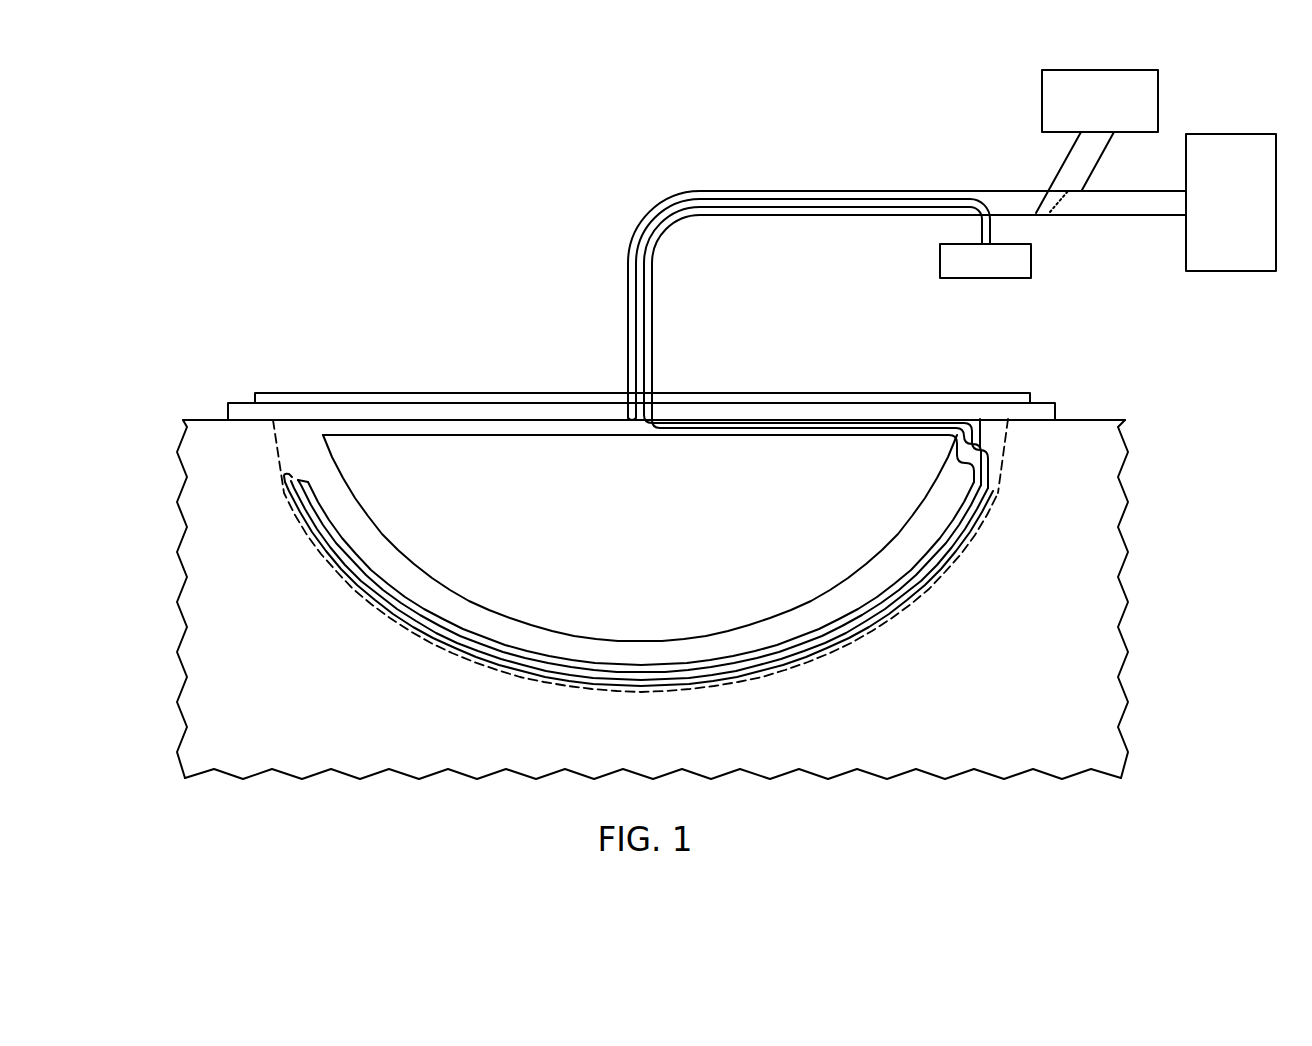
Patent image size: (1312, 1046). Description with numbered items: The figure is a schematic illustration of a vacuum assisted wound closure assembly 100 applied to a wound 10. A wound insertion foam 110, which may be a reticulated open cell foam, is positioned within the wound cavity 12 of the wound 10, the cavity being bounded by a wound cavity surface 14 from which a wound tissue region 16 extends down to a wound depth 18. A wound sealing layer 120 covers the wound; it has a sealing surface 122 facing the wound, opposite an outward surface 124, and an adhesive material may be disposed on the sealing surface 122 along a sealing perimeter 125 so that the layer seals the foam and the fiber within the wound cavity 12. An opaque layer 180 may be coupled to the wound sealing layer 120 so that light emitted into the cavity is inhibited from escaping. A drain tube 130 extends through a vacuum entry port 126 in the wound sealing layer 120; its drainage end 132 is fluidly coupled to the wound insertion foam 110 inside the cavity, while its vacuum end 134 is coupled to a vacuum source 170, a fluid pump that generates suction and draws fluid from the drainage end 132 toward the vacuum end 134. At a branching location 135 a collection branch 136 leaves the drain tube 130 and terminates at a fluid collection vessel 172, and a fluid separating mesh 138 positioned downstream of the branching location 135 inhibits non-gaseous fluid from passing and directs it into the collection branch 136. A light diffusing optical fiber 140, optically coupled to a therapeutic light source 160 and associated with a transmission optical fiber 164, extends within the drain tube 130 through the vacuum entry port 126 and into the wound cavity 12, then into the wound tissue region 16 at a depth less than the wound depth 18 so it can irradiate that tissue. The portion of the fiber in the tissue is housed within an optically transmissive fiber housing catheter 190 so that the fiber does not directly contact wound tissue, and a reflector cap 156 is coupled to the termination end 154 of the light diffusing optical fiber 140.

The vacuum assisted wound closure assembly 100 is at (187, 285).
The wound 10 is at (340, 618).
The wound cavity 12 is at (547, 635).
The wound cavity surface 14 is at (486, 636).
The wound tissue region 16 is at (432, 647).
The wound depth 18 is at (967, 438).
The wound insertion foam 110 is at (817, 586).
The wound sealing layer 120 is at (883, 393).
The sealing surface 122 is at (545, 436).
The outward surface 124 is at (238, 402).
The sealing perimeter 125 is at (227, 407).
The vacuum entry port 126 is at (620, 383).
The drain tube 130 is at (795, 190).
The drainage end 132 is at (630, 421).
The vacuum end 134 is at (1180, 230).
The branching location 135 is at (1032, 207).
The collection branch 136 is at (1100, 158).
The fluid separating mesh 138 is at (1056, 212).
The light diffusing optical fiber 140 is at (965, 531).
The termination end 154 is at (303, 468).
The reflector cap 156 is at (287, 481).
The therapeutic light source 160 is at (988, 279).
The transmission optical fiber 164 is at (805, 410).
The vacuum source 170 is at (1230, 134).
The fluid collection vessel 172 is at (1042, 100).
The opaque layer 180 is at (985, 393).
The fiber housing catheter 190 is at (1000, 500).